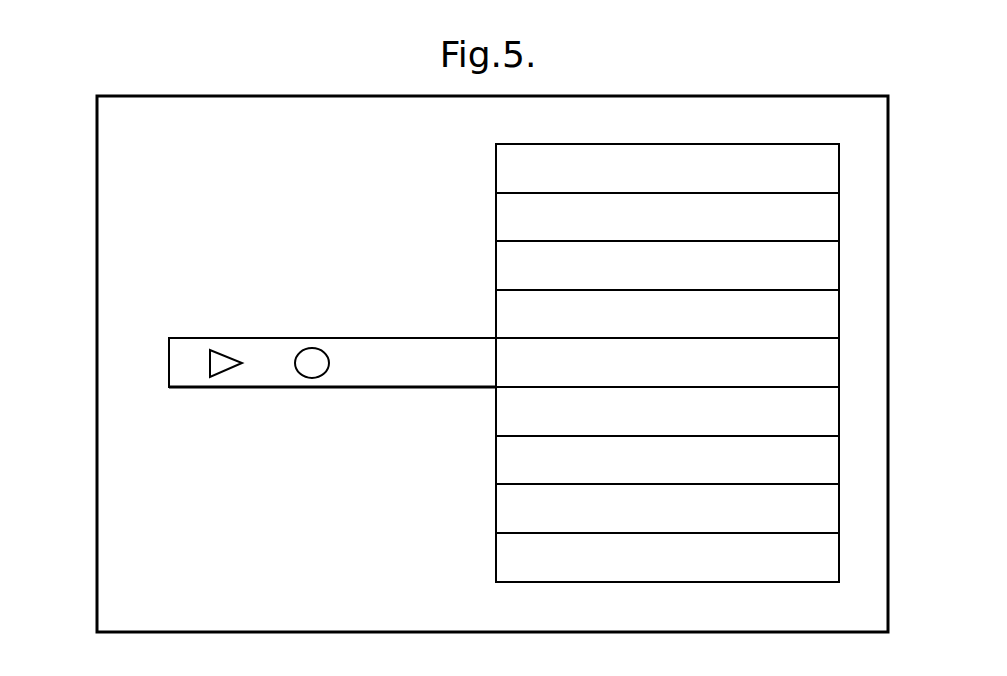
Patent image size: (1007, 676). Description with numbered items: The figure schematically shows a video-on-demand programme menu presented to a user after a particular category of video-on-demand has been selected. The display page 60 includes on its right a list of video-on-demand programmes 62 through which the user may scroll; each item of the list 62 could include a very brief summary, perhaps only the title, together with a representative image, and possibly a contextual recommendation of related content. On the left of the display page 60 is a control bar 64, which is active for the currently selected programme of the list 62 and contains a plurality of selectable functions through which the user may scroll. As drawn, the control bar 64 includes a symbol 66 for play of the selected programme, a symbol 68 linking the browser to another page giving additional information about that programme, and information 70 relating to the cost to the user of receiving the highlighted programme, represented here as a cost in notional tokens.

The display page 60 is at (128, 570).
The list of video-on-demand programmes 62 is at (825, 313).
The control bar 64 is at (183, 365).
The symbol for play 66 is at (225, 348).
The symbol linking to additional information page 68 is at (312, 348).
The information relating to cost 70 is at (405, 352).